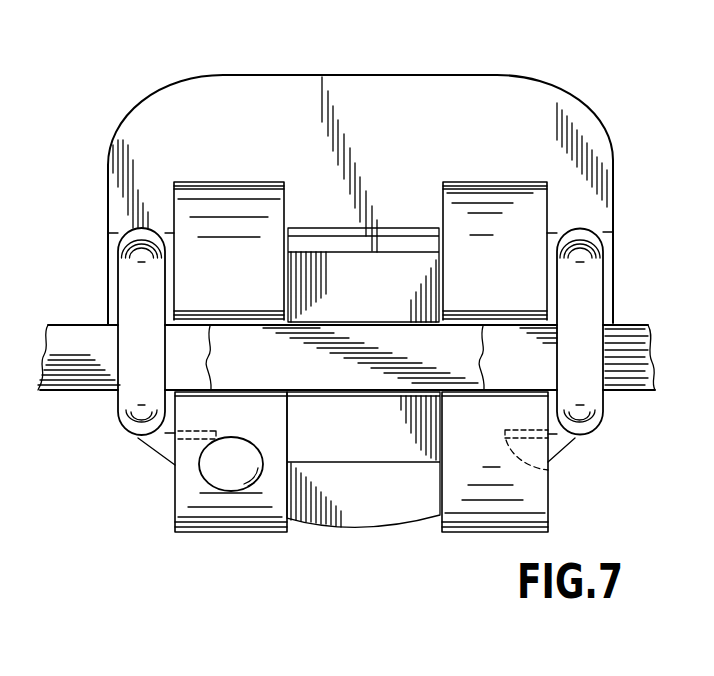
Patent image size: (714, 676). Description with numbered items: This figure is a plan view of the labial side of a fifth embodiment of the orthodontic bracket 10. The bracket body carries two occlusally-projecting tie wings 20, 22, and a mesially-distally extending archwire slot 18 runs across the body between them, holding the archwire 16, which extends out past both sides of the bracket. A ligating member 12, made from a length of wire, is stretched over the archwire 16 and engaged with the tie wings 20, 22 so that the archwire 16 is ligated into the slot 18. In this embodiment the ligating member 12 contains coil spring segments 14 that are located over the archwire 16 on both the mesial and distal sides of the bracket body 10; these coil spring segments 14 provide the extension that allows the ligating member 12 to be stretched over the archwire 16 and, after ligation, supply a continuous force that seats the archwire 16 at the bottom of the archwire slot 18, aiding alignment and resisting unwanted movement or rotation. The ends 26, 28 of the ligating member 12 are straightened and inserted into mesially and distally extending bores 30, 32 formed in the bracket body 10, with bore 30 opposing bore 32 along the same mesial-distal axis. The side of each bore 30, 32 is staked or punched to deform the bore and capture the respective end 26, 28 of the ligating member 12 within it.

The orthodontic bracket 10 is at (156, 68).
The ligating member 12 is at (397, 228).
The coil spring segment 14 is at (121, 236).
The archwire 16 is at (312, 380).
The archwire slot 18 is at (343, 357).
The tie wing 20 is at (237, 296).
The tie wing 22 is at (498, 296).
The end of ligating member 26 is at (210, 462).
The end of ligating member 28 is at (508, 433).
The bore 30 is at (206, 468).
The bore 32 is at (548, 470).